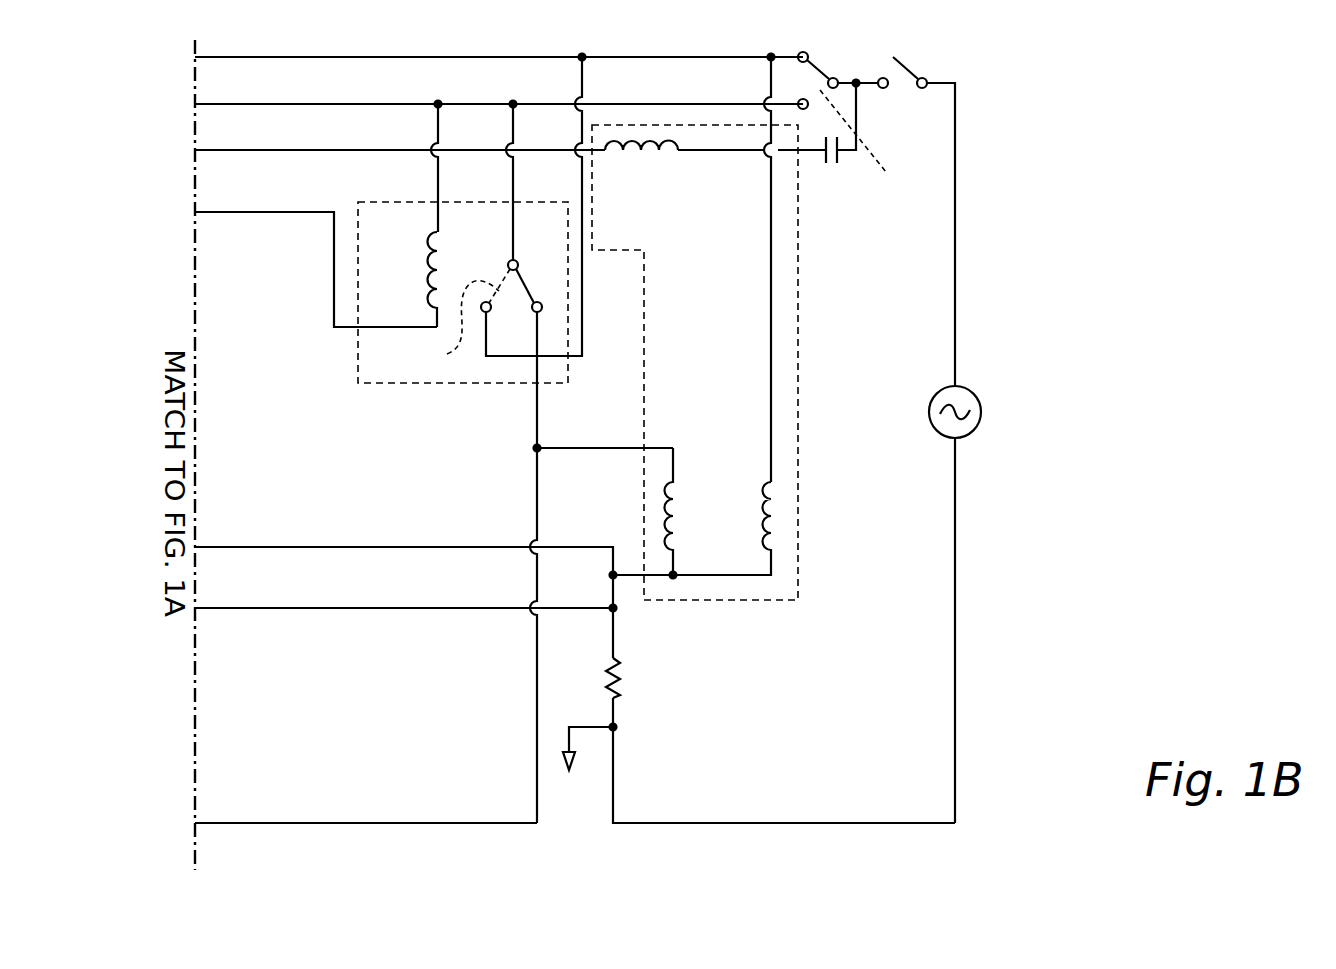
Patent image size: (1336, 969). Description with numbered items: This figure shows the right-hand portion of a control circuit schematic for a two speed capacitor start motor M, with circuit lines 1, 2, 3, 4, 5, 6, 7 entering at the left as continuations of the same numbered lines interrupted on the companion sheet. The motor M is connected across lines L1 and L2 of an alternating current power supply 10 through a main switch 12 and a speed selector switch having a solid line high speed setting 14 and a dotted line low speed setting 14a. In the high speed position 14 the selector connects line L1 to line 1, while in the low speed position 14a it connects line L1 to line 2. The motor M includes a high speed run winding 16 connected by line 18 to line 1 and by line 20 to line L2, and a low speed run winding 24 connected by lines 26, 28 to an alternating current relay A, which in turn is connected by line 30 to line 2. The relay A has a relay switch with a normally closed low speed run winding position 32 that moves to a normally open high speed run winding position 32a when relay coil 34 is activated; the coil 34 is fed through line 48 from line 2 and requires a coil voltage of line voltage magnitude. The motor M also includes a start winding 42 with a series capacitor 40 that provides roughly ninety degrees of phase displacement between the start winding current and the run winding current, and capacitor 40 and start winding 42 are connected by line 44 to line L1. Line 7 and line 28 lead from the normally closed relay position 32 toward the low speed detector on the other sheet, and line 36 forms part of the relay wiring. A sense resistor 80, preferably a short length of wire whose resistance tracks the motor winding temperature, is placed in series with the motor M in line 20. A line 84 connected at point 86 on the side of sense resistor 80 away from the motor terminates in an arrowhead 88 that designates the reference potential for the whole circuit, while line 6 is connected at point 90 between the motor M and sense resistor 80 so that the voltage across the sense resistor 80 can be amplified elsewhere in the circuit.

The circuit line 1 is at (255, 60).
The circuit line 2 is at (255, 108).
The circuit line 3 is at (255, 154).
The circuit line 4 is at (255, 216).
The circuit line 5 is at (255, 551).
The circuit line 6 is at (255, 612).
The circuit line 7 is at (255, 827).
The alternating current power supply 10 is at (937, 388).
The main switch 12 is at (910, 70).
The high speed setting of speed selector switch 14 is at (818, 72).
The low speed setting of speed selector switch 14a is at (888, 175).
The high speed run winding 16 is at (771, 527).
The line 18 is at (771, 336).
The line 20 is at (614, 760).
The low speed run winding 24 is at (678, 521).
The line 26 is at (616, 448).
The line 28 is at (537, 418).
The line 30 is at (513, 118).
The normally closed low speed run winding position 32 is at (540, 277).
The normally open high speed run winding position 32a is at (448, 325).
The relay coil 34 is at (437, 266).
The relay contact conductor 36 is at (582, 325).
The capacitor 40 is at (839, 164).
The start winding 42 is at (658, 152).
The line 44 is at (857, 104).
The line 48 is at (438, 118).
The sense resistor 80 is at (614, 690).
The line 84 is at (589, 727).
The point 86 is at (614, 728).
The arrowhead 88 is at (578, 762).
The point 90 is at (614, 609).
The alternating current relay A is at (445, 388).
The two speed capacitor start motor M is at (801, 421).
The line L1 is at (941, 80).
The line L2 is at (880, 823).